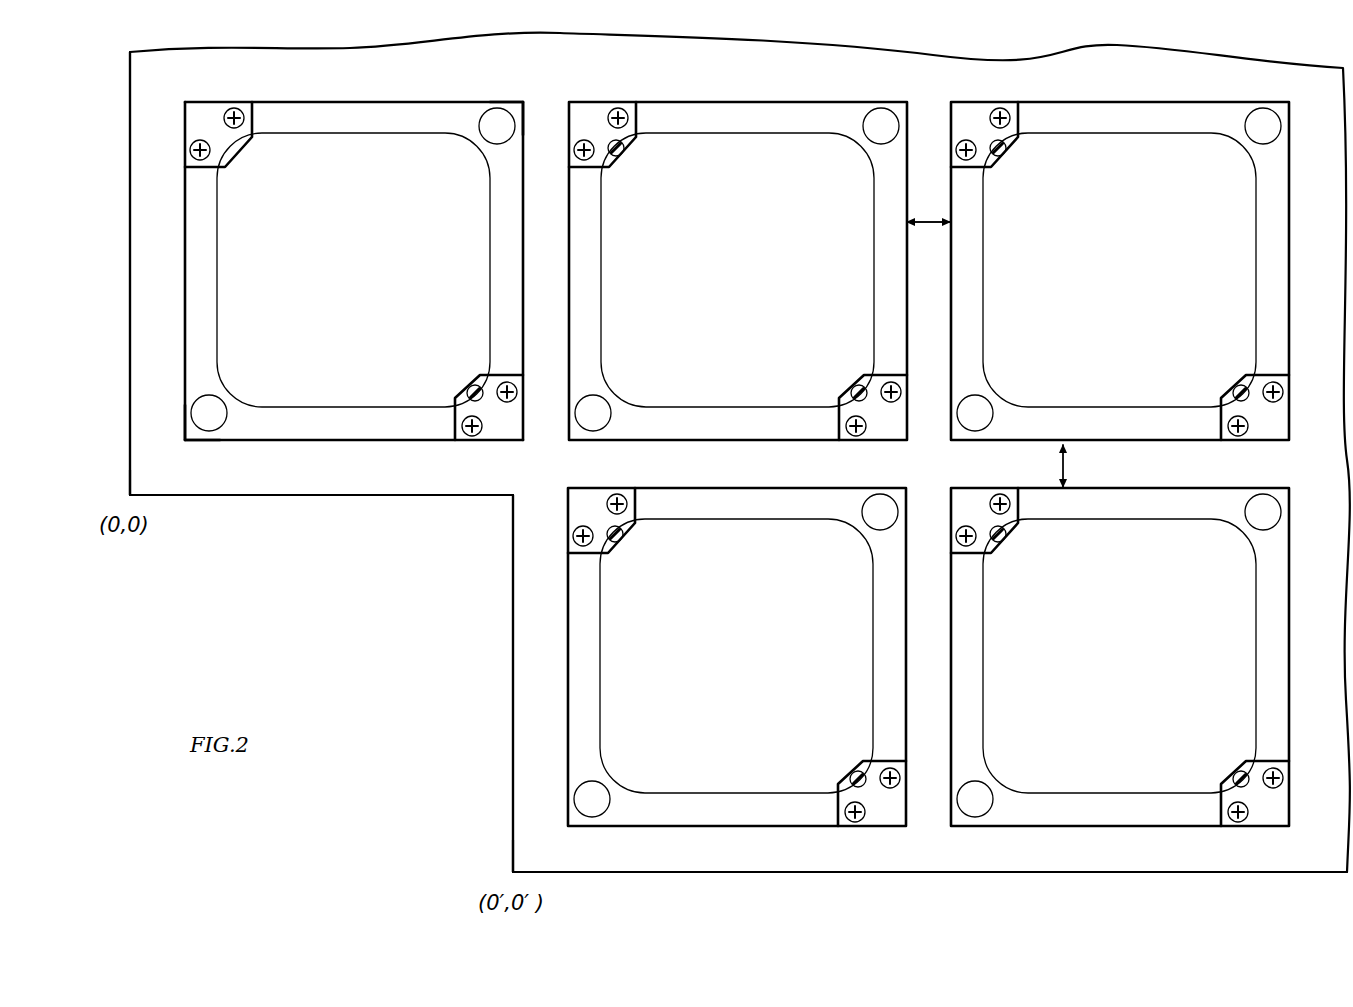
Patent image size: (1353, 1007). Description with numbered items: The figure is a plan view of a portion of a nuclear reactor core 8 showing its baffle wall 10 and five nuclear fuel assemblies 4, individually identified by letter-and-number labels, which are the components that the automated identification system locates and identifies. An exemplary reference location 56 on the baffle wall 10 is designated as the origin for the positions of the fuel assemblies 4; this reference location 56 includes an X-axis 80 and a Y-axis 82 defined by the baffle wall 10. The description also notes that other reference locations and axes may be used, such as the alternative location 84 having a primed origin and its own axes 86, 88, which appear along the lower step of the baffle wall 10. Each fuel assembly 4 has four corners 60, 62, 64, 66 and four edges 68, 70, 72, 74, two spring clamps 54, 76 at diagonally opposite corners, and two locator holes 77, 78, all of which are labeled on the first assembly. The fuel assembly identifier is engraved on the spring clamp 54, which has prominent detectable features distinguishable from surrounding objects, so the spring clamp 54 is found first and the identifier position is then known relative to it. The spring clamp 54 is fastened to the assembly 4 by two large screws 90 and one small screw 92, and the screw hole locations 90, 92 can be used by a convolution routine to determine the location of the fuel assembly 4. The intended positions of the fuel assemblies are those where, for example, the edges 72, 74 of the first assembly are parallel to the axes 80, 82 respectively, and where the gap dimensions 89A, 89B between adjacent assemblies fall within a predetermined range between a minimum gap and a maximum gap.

The nuclear fuel assembly 4 is at (738, 462).
The nuclear reactor core 8 is at (1017, 880).
The baffle wall 10 is at (400, 499).
The spring clamp 54 is at (495, 431).
The reference location 56 is at (130, 495).
The corner 60 is at (187, 101).
The corner 62 is at (907, 275).
The corner 64 is at (523, 442).
The corner 66 is at (564, 625).
The edge 68 is at (418, 101).
The edge 70 is at (525, 270).
The edge 72 is at (378, 443).
The edge 74 is at (184, 269).
The spring clamp 76 is at (212, 111).
The locator hole 77 is at (498, 122).
The locator hole 78 is at (210, 426).
The X-axis 80 is at (292, 496).
The Y-axis 82 is at (130, 167).
The location 84 is at (511, 873).
The axis 86 is at (703, 874).
The axis 88 is at (513, 666).
The gap dimension 89A is at (928, 214).
The gap dimension 89B is at (1068, 463).
The large screws 90 is at (484, 420).
The small screw 92 is at (467, 392).